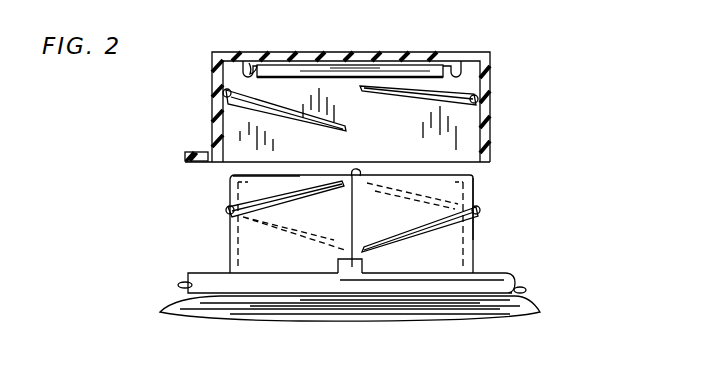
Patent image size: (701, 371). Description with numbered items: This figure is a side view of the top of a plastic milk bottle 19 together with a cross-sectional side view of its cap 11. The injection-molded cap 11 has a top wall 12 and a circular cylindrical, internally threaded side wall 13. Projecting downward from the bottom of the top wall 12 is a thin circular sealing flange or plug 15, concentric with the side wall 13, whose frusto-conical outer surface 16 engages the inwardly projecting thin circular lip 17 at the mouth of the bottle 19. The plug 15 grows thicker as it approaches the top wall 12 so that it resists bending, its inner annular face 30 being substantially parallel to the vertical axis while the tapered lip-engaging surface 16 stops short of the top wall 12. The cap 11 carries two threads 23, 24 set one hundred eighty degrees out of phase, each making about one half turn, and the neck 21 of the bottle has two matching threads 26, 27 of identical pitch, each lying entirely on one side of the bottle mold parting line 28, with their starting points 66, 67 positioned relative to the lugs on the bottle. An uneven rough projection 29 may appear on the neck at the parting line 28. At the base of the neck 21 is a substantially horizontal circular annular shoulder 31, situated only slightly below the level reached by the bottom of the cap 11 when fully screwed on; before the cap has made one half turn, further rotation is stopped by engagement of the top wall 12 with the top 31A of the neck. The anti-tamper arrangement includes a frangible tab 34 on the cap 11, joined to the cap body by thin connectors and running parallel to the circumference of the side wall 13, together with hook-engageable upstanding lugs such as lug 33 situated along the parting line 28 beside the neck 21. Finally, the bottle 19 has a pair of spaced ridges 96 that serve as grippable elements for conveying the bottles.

The cap 11 is at (512, 70).
The top wall 12 is at (272, 53).
The side wall 13 is at (214, 68).
The sealing flange or plug 15 is at (286, 66).
The frusto-conical outer surface 16 is at (245, 62).
The lip 17 is at (476, 174).
The bottle 19 is at (540, 293).
The neck 21 is at (158, 217).
The cap thread 23 is at (224, 96).
The cap thread 24 is at (481, 92).
The neck thread 26 is at (234, 214).
The neck thread 27 is at (479, 222).
The mold parting line 28 is at (350, 216).
The rough projection 29 is at (356, 176).
The inner annular face 30 is at (253, 65).
The shoulder 31 is at (205, 273).
The top of the neck 31A is at (230, 176).
The upstanding lug 33 is at (356, 262).
The tab 34 is at (194, 152).
The starting point 66 is at (228, 201).
The starting point 67 is at (480, 205).
The ridges 96 is at (180, 285).